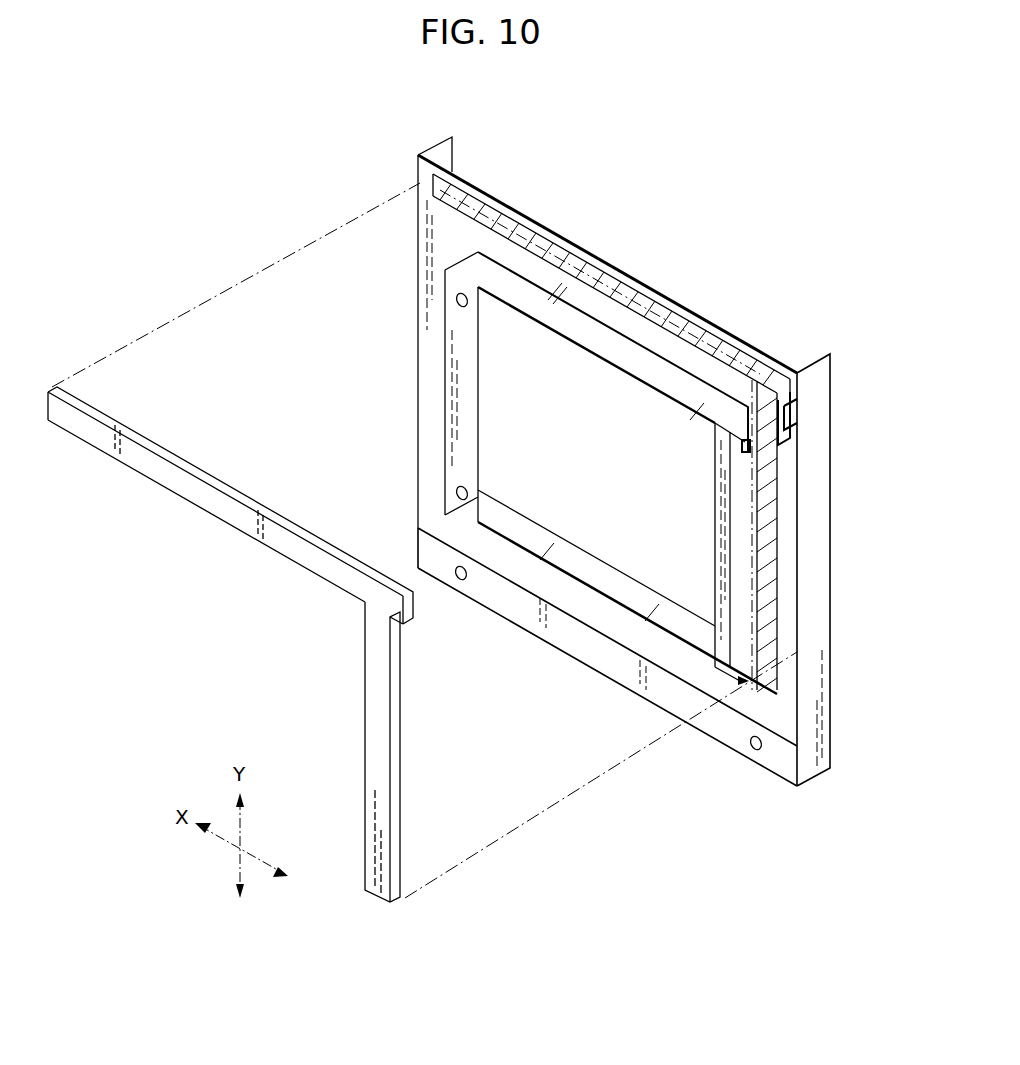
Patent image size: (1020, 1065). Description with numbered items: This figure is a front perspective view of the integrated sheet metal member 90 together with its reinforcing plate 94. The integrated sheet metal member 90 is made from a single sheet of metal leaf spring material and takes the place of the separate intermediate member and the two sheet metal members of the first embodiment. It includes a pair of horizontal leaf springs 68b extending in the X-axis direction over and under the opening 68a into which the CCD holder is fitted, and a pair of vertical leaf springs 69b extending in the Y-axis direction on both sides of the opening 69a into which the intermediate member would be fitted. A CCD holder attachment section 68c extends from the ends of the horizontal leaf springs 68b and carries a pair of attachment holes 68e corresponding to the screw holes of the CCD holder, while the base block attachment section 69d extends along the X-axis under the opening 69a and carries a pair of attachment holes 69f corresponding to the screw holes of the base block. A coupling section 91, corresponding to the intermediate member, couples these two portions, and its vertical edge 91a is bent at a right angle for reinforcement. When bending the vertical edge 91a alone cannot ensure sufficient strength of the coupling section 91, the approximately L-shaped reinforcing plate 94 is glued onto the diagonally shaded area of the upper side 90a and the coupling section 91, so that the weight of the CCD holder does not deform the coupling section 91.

The integrated sheet metal member 90 is at (505, 188).
The upper side 90a is at (598, 264).
The vertical leaf springs 69b is at (417, 256).
The base block attachment section 69d is at (590, 655).
The opening 69a is at (510, 568).
The attachment holes 69f is at (757, 757).
The opening 68a is at (480, 418).
The horizontal leaf springs 68b is at (628, 375).
The CCD holder attachment section 68c is at (445, 385).
The attachment holes 68e is at (452, 494).
The coupling section 91 is at (720, 468).
The vertical edge 91a is at (800, 652).
The reinforcing plate 94 is at (378, 660).